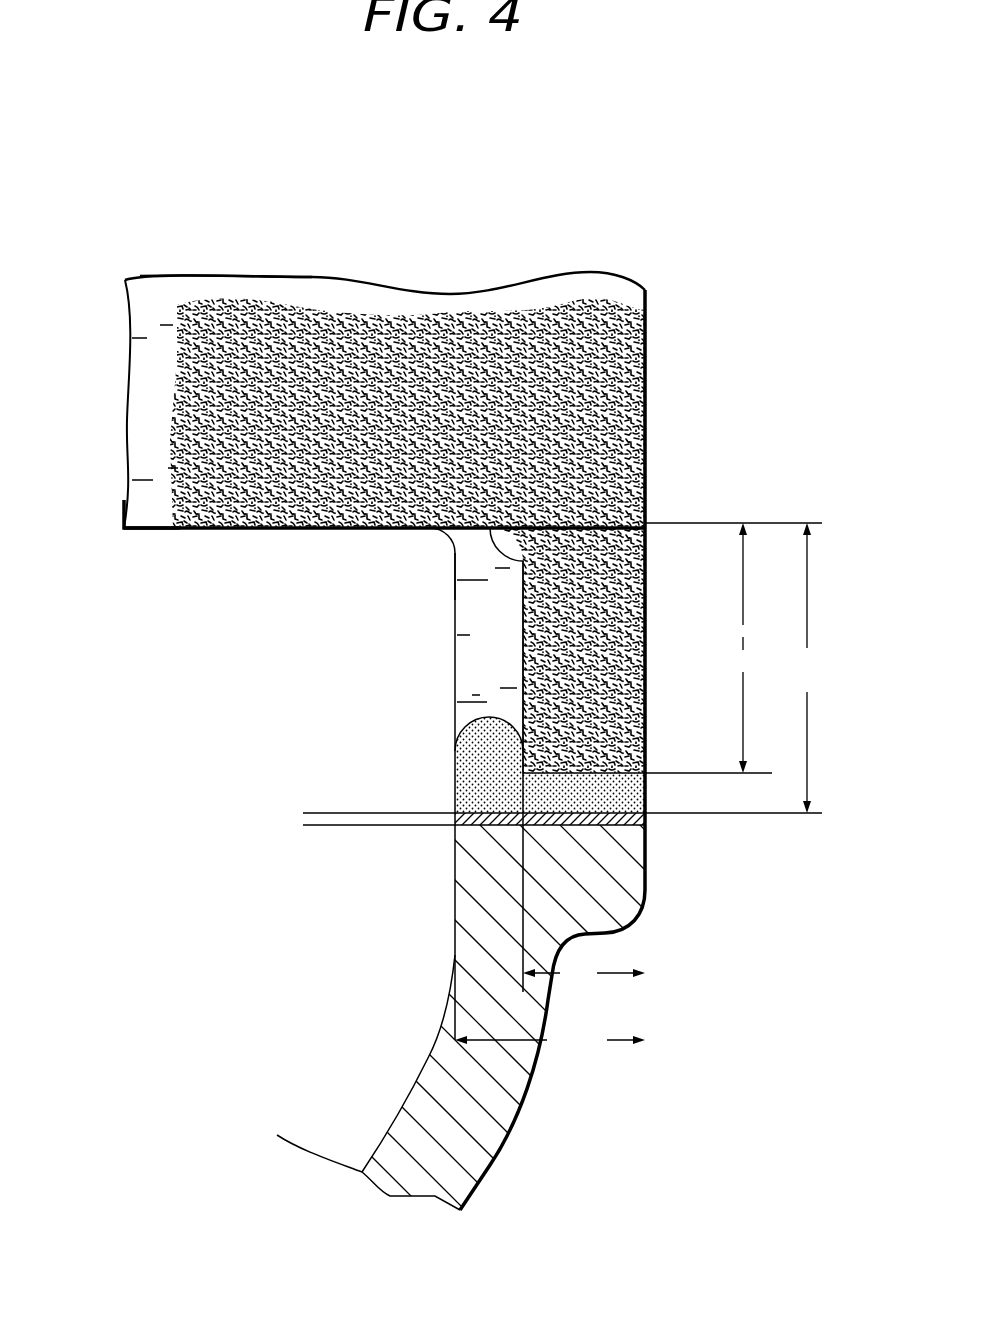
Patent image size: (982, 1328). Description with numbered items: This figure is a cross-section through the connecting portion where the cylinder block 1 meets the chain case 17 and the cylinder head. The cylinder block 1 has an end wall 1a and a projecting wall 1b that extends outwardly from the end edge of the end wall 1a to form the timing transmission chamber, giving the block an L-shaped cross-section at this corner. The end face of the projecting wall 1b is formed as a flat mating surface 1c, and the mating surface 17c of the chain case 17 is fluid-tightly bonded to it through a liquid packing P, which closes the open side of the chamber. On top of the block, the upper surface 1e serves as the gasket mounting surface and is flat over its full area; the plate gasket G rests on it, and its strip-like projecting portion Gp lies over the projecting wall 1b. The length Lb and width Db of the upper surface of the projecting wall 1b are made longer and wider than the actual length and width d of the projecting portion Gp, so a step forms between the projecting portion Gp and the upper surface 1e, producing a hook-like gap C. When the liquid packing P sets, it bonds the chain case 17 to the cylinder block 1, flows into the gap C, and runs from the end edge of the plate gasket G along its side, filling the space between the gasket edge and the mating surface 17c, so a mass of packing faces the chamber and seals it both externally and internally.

The cylinder block 1 is at (645, 297).
The end wall of the cylinder block 1a is at (140, 531).
The projecting wall of the cylinder block 1b is at (455, 590).
The mating surface of the cylinder block 1c is at (500, 827).
The upper surface of the cylinder block 1e is at (312, 290).
The chain case 17 is at (490, 1140).
The mating surface of the chain case 17c is at (455, 798).
The gap C is at (455, 680).
The plate gasket G is at (596, 407).
The projecting portion of the plate gasket Gp is at (645, 642).
The liquid packing P is at (645, 792).
The length of the upper surface of the projecting wall Lb is at (736, 668).
The width of the projecting portion d is at (584, 972).
The width of the upper surface of the projecting wall Db is at (550, 1037).